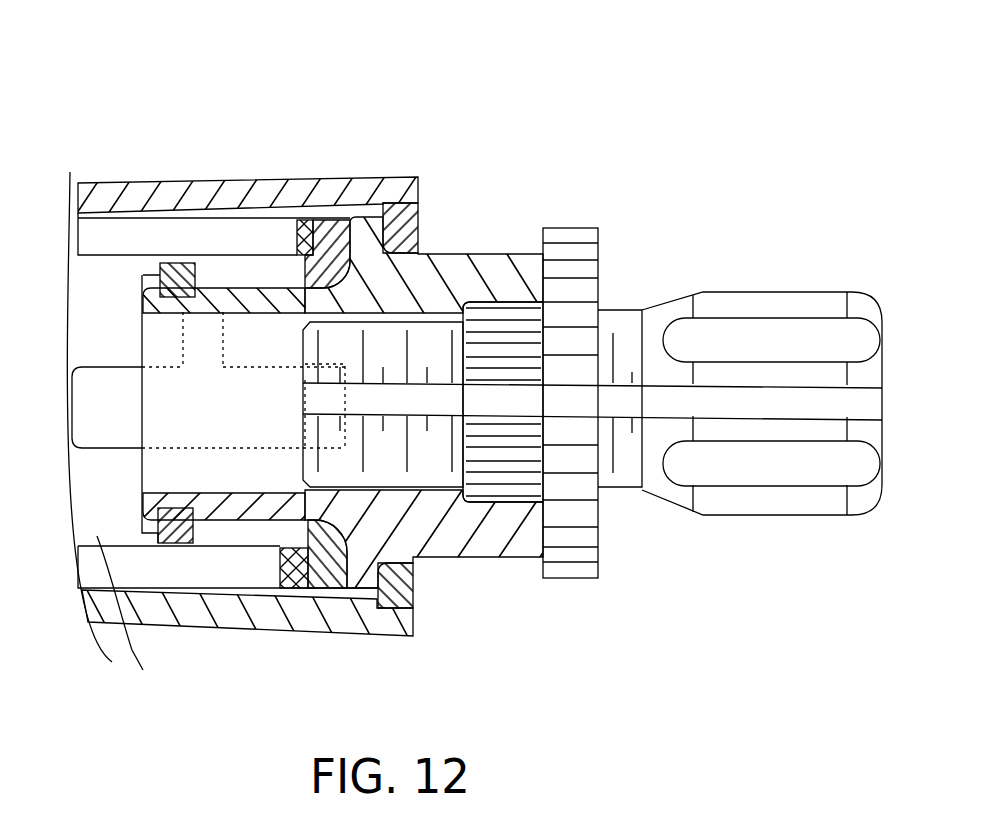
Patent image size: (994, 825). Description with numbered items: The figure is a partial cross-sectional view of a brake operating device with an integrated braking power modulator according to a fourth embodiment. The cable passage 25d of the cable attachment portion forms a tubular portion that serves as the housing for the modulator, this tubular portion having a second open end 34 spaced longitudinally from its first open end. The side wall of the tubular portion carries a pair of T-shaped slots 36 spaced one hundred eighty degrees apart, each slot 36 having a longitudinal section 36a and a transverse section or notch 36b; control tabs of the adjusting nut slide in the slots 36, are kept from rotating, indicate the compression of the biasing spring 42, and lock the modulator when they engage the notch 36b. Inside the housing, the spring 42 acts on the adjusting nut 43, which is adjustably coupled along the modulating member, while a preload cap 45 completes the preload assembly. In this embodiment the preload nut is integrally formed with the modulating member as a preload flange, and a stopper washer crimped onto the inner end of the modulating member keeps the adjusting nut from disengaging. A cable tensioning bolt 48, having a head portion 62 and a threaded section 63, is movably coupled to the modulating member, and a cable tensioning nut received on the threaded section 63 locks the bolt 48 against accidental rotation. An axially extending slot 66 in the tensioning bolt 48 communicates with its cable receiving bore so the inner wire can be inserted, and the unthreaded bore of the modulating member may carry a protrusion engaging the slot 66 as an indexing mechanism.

The cable passage 25d is at (138, 613).
The second open end 34 is at (420, 200).
The T-shaped slots 36 is at (116, 456).
The longitudinal section 36a is at (110, 378).
The transverse section or notch 36b is at (182, 340).
The biasing member or spring 42 is at (271, 208).
The adjusting nut or member 43 is at (92, 175).
The preload cap or member 45 is at (418, 232).
The cable tensioning bolt 48 is at (787, 292).
The head portion 62 is at (715, 292).
The threaded section 63 is at (622, 308).
The axially extending slot 66 is at (768, 418).